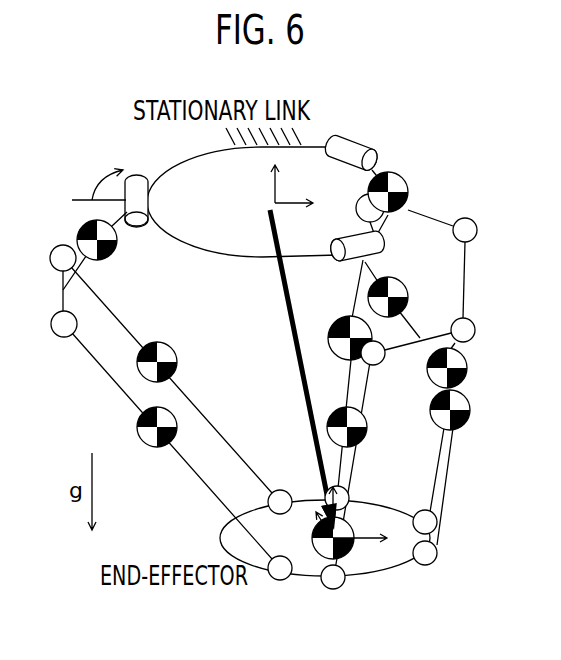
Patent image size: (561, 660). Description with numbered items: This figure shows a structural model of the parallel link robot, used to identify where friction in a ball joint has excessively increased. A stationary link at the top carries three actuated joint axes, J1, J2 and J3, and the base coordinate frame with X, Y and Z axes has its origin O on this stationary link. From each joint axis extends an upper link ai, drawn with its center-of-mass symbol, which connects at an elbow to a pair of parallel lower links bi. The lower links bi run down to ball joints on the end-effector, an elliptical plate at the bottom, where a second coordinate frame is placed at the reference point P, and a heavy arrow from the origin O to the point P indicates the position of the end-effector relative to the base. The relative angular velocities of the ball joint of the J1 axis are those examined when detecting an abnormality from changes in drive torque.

The J1 axis J1 is at (92, 186).
The J2 axis J2 is at (355, 263).
The J3 axis J3 is at (351, 147).
The link a_i ai is at (126, 268).
The link b_i bi is at (169, 413).
The origin O is at (289, 199).
The end-effector reference point P is at (340, 524).